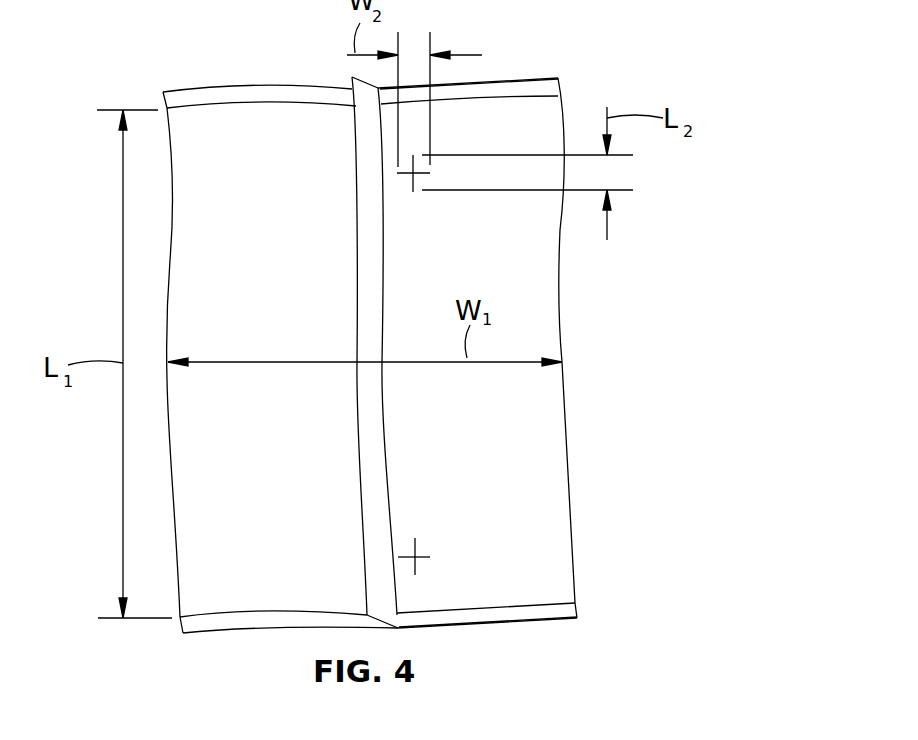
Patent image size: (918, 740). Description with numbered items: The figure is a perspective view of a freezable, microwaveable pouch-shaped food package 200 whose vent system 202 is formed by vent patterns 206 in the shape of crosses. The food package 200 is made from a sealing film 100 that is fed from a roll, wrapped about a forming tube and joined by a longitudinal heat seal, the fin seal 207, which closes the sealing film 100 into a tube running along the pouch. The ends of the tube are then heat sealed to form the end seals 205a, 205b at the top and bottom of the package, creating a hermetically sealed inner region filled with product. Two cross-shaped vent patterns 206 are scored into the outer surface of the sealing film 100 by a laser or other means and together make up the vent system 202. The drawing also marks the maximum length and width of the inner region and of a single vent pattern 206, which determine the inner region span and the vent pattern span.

The sealing film 100 is at (555, 470).
The food package 200 is at (492, 332).
The vent system 202 is at (438, 148).
The end seal 205a is at (560, 87).
The end seal 205b is at (570, 612).
The vent pattern 206 is at (412, 181).
The fin seal 207 is at (370, 323).